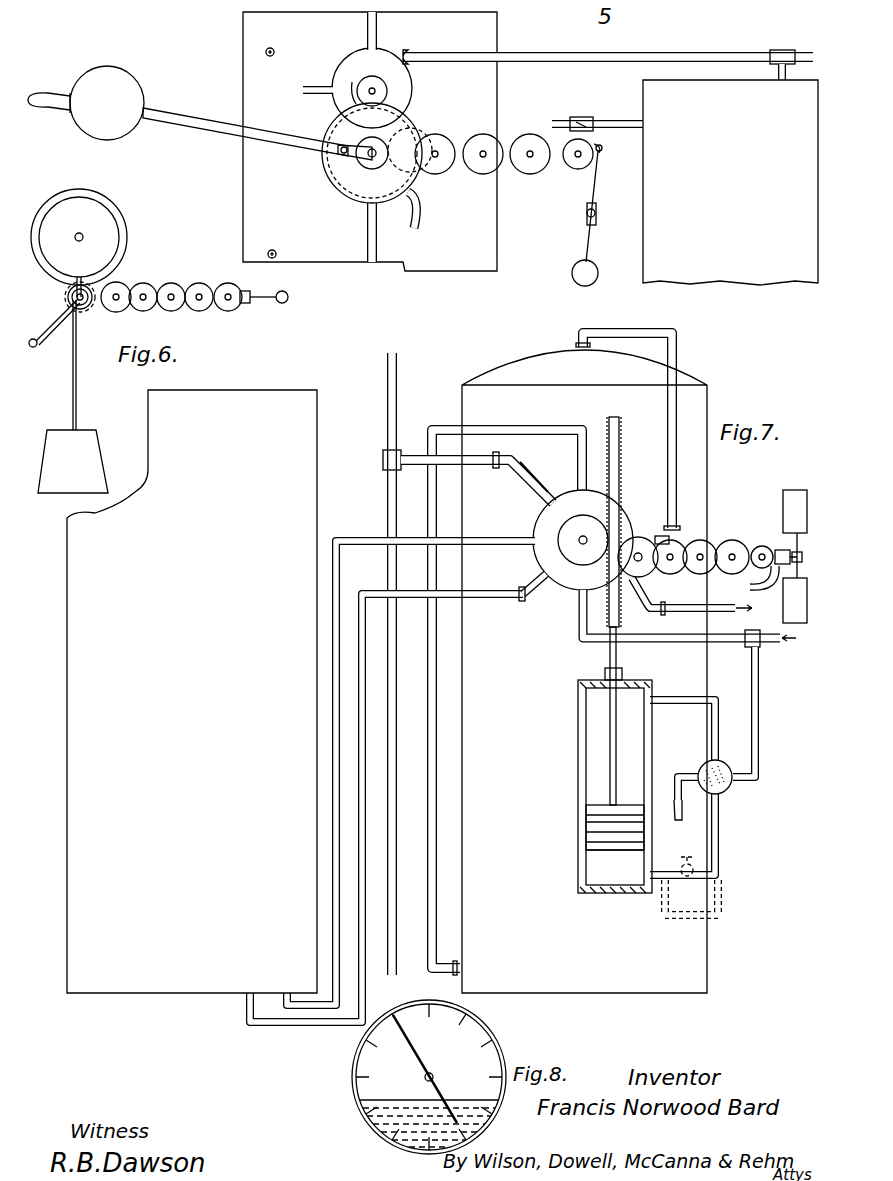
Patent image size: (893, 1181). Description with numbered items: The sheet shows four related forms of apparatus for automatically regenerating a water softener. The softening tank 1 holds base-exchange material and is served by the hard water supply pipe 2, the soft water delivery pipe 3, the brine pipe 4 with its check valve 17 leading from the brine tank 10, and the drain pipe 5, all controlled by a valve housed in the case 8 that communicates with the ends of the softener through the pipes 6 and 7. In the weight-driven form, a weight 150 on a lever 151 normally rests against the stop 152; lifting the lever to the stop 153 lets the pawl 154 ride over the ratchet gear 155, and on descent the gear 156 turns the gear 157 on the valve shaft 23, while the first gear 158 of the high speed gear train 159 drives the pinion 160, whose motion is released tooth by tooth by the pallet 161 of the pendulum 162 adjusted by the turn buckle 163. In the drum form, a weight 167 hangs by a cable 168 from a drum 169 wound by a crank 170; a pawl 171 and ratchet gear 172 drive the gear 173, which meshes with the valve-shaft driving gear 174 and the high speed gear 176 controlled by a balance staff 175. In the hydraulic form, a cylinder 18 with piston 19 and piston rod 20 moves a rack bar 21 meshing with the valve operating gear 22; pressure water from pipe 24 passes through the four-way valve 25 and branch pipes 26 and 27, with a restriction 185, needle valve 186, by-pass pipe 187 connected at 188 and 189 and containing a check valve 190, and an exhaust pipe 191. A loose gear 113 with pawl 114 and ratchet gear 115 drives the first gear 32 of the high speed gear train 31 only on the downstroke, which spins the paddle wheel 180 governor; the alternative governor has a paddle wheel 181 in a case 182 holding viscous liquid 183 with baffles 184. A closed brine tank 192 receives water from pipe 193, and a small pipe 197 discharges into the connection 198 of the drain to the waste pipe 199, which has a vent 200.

In FIG. 5, the softening tank 1 is at (243, 63).
In FIG. 7, the softening tank 1 is at (708, 393).
In FIG. 5, the hard water supply pipe 2 is at (306, 86).
In FIG. 7, the hard water supply pipe 2 is at (682, 643).
In FIG. 5, the soft water delivery pipe 3 is at (519, 62).
In FIG. 7, the soft water delivery pipe 3 is at (696, 614).
In FIG. 5, the brine pipe 4 is at (603, 120).
In FIG. 7, the brine pipe 4 is at (500, 546).
In FIG. 5, the drain pipe 5 is at (419, 222).
In FIG. 7, the drain pipe 5 is at (535, 479).
In FIG. 5, the pipe 6 is at (378, 30).
In FIG. 7, the pipe 6 is at (637, 431).
In FIG. 5, the pipe 7 is at (378, 250).
In FIG. 7, the pipe 7 is at (577, 458).
In FIG. 5, the valve case 8 is at (356, 60).
In FIG. 6, the valve case 8 is at (113, 216).
In FIG. 7, the valve case 8 is at (588, 531).
In FIG. 5, the brine tank 10 is at (647, 98).
In FIG. 5, the check valve 17 is at (578, 117).
In FIG. 7, the hydraulic cylinder 18 is at (580, 863).
In FIG. 7, the piston 19 is at (588, 812).
In FIG. 7, the piston rod 20 is at (612, 712).
In FIG. 7, the rack bar 21 is at (615, 470).
In FIG. 7, the valve operating gear 22 is at (566, 578).
In FIG. 6, the valve shaft 23 is at (86, 237).
In FIG. 7, the valve shaft 23 is at (582, 547).
In FIG. 7, the pipe 24 is at (766, 718).
In FIG. 7, the valve 25 is at (728, 790).
In FIG. 7, the branch pipe 26 is at (719, 727).
In FIG. 7, the branch pipe 27 is at (721, 847).
In FIG. 7, the high speed gear train 31 is at (723, 576).
In FIG. 7, the first gear 32 is at (645, 536).
In FIG. 7, the loose gear 113 is at (634, 590).
In FIG. 7, the pawl 114 is at (664, 540).
In FIG. 7, the ratchet gear 115 is at (649, 573).
In FIG. 5, the weight 150 is at (113, 136).
In FIG. 5, the lever 151 is at (222, 138).
In FIG. 5, the stop 152 is at (277, 252).
In FIG. 5, the stop 153 is at (273, 49).
In FIG. 5, the pawl 154 is at (345, 160).
In FIG. 5, the ratchet gear 155 is at (362, 200).
In FIG. 5, the gear 156 is at (330, 162).
In FIG. 5, the gear 157 is at (390, 90).
In FIG. 5, the first gear 158 is at (438, 176).
In FIG. 5, the high speed gear train 159 is at (516, 194).
In FIG. 5, the pinion 160 is at (577, 169).
In FIG. 5, the pallet 161 is at (593, 153).
In FIG. 5, the pendulum 162 is at (590, 243).
In FIG. 5, the turn buckle 163 is at (596, 213).
In FIG. 6, the weight 167 is at (83, 447).
In FIG. 6, the cable 168 is at (77, 372).
In FIG. 6, the drum 169 is at (68, 295).
In FIG. 6, the crank 170 is at (40, 343).
In FIG. 6, the pawl 171 is at (84, 312).
In FIG. 6, the ratchet gear 172 is at (79, 280).
In FIG. 6, the gear 173 is at (68, 301).
In FIG. 6, the valve-shaft driving gear 174 is at (112, 246).
In FIG. 6, the balance staff 175 is at (268, 303).
In FIG. 6, the high speed gear 176 is at (166, 280).
In FIG. 7, the paddle wheel 180 is at (784, 512).
In FIG. 8, the paddle wheel 181 is at (425, 1052).
In FIG. 8, the case 182 is at (497, 1032).
In FIG. 8, the viscous liquid 183 is at (395, 1121).
In FIG. 8, the baffles 184 is at (358, 1100).
In FIG. 7, the restriction 185 is at (691, 897).
In FIG. 7, the needle valve 186 is at (687, 855).
In FIG. 7, the by-pass pipe 187 is at (733, 906).
In FIG. 7, the by-pass connection 188 is at (725, 882).
In FIG. 7, the by-pass connection 189 is at (660, 891).
In FIG. 7, the check valve 190 is at (680, 931).
In FIG. 7, the exhaust pipe 191 is at (676, 804).
In FIG. 7, the closed brine tank 192 is at (283, 384).
In FIG. 7, the pipe 193 is at (494, 598).
In FIG. 7, the small pipe 197 is at (400, 452).
In FIG. 7, the connection 198 is at (383, 462).
In FIG. 7, the waste pipe 199 is at (387, 507).
In FIG. 7, the vent 200 is at (397, 401).